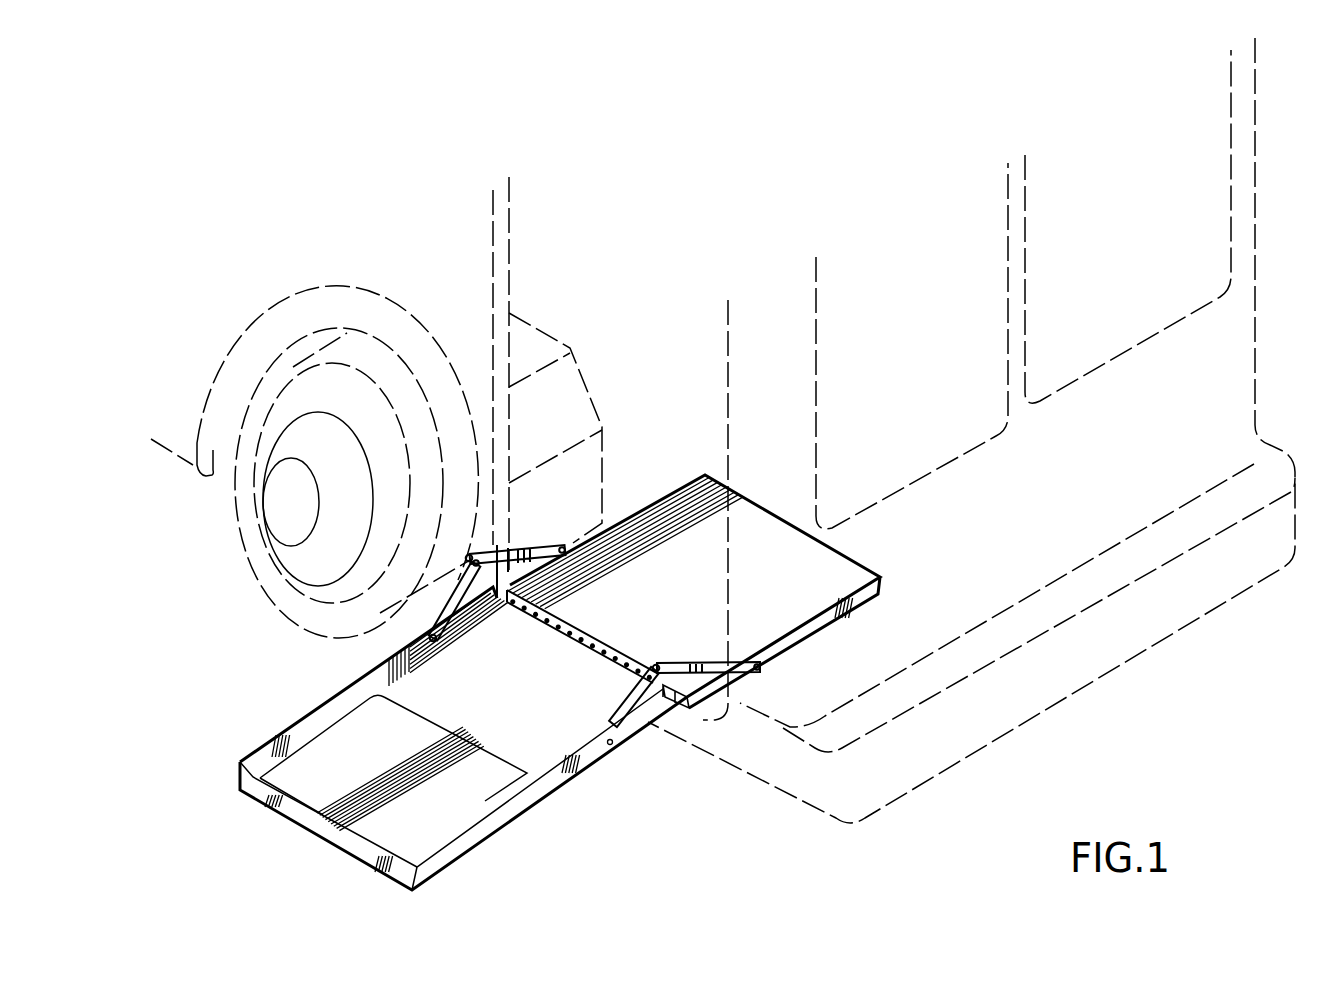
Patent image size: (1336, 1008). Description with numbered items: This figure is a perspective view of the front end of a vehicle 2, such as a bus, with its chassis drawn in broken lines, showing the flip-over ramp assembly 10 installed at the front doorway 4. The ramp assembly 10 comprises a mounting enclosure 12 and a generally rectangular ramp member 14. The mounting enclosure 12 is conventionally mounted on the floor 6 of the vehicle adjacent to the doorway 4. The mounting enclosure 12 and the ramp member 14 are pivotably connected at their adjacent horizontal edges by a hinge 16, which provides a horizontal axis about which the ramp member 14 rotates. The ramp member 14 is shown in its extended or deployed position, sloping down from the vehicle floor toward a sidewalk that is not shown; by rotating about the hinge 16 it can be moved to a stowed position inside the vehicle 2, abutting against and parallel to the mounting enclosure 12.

The vehicle 2 is at (1257, 365).
The front doorway 4 is at (504, 290).
The floor 6 is at (676, 416).
The flip-over ramp assembly 10 is at (560, 686).
The mounting enclosure 12 is at (709, 596).
The ramp member 14 is at (548, 729).
The hinge 16 is at (678, 706).